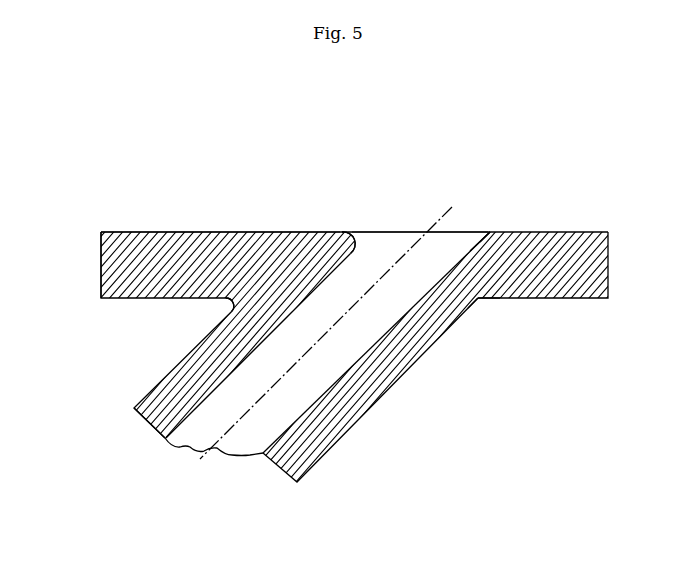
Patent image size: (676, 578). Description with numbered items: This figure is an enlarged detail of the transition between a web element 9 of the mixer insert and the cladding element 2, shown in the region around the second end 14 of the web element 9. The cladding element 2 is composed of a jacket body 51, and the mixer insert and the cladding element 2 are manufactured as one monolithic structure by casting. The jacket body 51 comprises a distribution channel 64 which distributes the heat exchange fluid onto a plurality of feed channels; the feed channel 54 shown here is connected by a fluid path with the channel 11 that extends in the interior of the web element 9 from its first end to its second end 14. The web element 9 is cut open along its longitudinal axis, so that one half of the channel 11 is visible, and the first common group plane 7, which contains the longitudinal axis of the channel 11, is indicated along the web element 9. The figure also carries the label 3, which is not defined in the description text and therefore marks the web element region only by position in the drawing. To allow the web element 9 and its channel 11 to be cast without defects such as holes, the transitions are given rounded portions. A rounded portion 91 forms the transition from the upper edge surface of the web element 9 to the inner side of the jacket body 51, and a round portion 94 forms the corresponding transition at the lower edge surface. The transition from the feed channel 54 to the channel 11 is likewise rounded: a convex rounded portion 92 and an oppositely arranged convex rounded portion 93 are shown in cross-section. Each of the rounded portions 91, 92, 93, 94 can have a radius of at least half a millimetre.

The cladding element 2 is at (146, 224).
The connecting piece / tubular arm 3 is at (136, 387).
The first common group plane 7 is at (447, 205).
The web element 9 is at (162, 411).
The channel 11 is at (220, 421).
The second end 14 is at (480, 304).
The jacket body 51 is at (122, 263).
The feed channel 54 is at (388, 243).
The distribution channel 64 is at (266, 194).
The rounded portion 91 is at (231, 308).
The convex rounded portion 92 is at (349, 234).
The convex rounded portion 93 is at (490, 231).
The round portion 94 is at (480, 301).